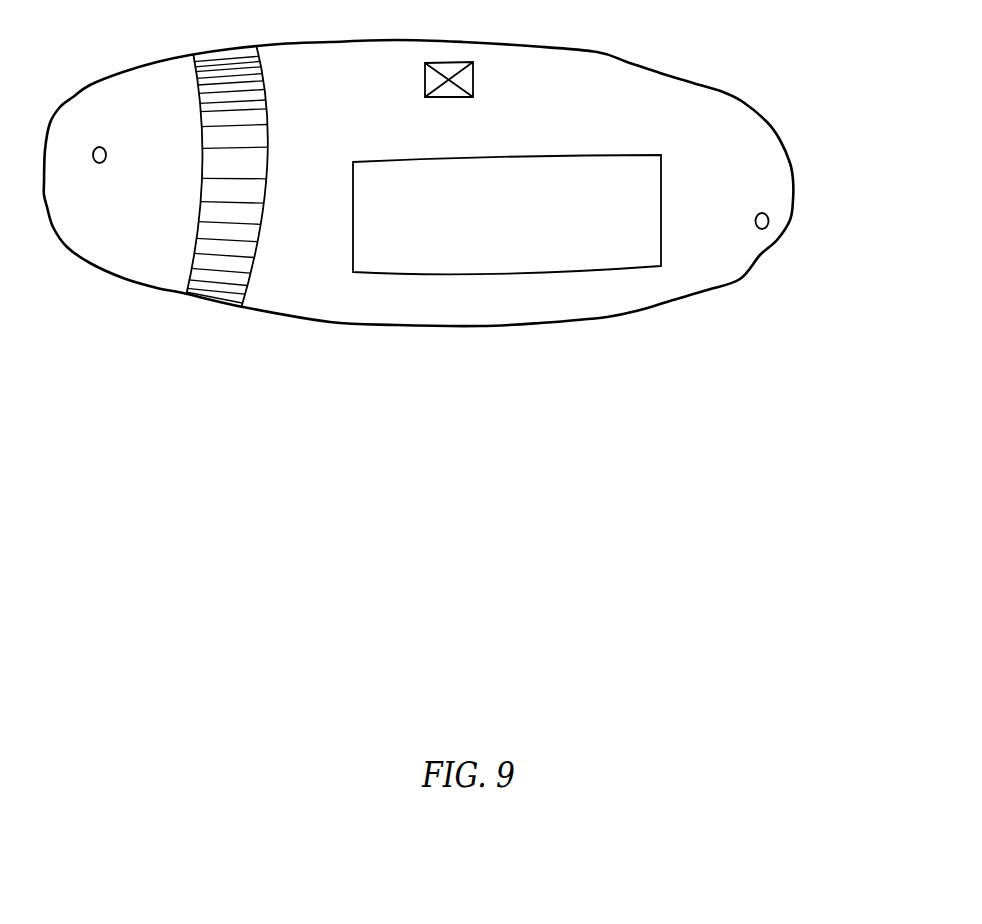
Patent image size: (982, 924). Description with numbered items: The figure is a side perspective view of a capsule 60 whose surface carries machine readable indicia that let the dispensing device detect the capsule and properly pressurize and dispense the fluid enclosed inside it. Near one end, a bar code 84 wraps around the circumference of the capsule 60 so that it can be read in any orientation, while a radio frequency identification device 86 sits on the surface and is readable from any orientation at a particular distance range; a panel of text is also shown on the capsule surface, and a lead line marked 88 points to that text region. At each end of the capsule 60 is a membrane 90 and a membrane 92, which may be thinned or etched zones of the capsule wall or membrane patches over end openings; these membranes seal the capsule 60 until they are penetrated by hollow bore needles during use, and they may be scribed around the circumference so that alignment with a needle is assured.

The capsule 60 is at (723, 92).
The bar code 84 is at (227, 62).
The radio frequency identification (RFID) device 86 is at (443, 78).
The label panel 88 is at (663, 229).
The membrane 90 is at (98, 146).
The membrane 92 is at (769, 222).